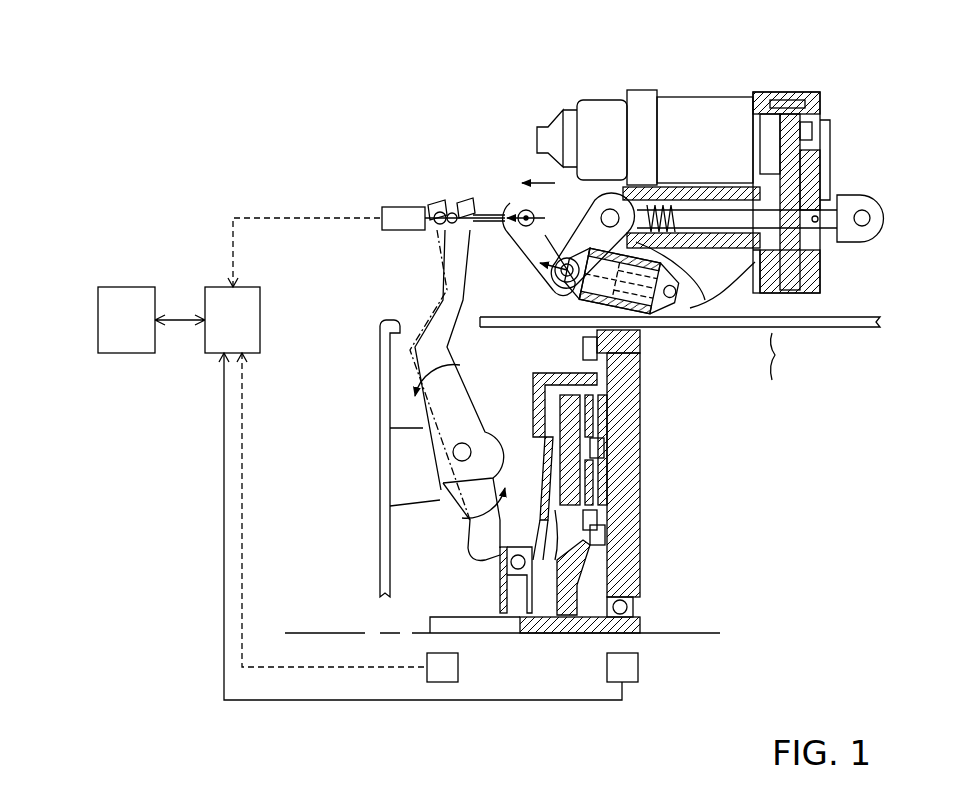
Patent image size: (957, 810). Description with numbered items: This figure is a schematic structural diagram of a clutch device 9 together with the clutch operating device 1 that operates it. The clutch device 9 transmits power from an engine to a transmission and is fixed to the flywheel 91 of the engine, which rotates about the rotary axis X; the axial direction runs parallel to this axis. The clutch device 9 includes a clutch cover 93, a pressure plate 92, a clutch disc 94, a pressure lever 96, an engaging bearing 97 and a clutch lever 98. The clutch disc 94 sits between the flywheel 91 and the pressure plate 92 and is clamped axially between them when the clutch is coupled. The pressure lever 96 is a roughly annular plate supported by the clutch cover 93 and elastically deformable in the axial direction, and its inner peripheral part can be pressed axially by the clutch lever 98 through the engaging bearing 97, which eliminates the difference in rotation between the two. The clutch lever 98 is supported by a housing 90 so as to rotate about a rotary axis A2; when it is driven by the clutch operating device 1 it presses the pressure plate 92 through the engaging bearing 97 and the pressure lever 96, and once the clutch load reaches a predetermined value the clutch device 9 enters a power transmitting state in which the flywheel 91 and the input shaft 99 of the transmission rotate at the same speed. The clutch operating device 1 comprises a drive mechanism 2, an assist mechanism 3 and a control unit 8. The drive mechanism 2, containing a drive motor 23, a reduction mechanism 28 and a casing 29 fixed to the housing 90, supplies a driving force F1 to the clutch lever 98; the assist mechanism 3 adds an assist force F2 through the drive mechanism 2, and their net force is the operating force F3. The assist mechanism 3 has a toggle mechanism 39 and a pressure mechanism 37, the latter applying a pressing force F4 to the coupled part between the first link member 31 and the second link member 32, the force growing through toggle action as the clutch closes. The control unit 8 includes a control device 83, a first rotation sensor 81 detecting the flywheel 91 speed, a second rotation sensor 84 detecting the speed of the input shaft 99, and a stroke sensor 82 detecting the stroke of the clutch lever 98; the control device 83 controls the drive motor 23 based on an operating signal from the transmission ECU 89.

The clutch operating device 1 is at (880, 78).
The drive mechanism 2 is at (719, 166).
The assist mechanism 3 is at (676, 312).
The control unit 8 is at (213, 182).
The clutch device 9 is at (636, 478).
The drive motor 23 is at (690, 110).
The reduction mechanism 28 is at (808, 158).
The casing 29 is at (812, 90).
The first link member 31 is at (596, 212).
The second link member 32 is at (548, 218).
The pressure mechanism 37 is at (672, 298).
The toggle mechanism 39 is at (645, 258).
The first rotation sensor 81 is at (638, 668).
The stroke sensor 82 is at (400, 212).
The control device 83 is at (220, 305).
The second rotation sensor 84 is at (427, 660).
The transmission ECU 89 is at (125, 315).
The housing 90 is at (385, 318).
The flywheel 91 is at (627, 467).
The pressure plate 92 is at (565, 500).
The clutch cover 93 is at (555, 372).
The clutch disc 94 is at (607, 408).
The pressure lever 96 is at (545, 465).
The engaging bearing 97 is at (517, 605).
The clutch lever 98 is at (463, 287).
The input shaft 99 is at (650, 622).
The rotary axis A2 is at (455, 450).
The driving force F1 is at (548, 180).
The assist force F2 is at (505, 215).
The operating force F3 is at (468, 200).
The pressing force F4 is at (548, 272).
The rotary axis X is at (322, 633).